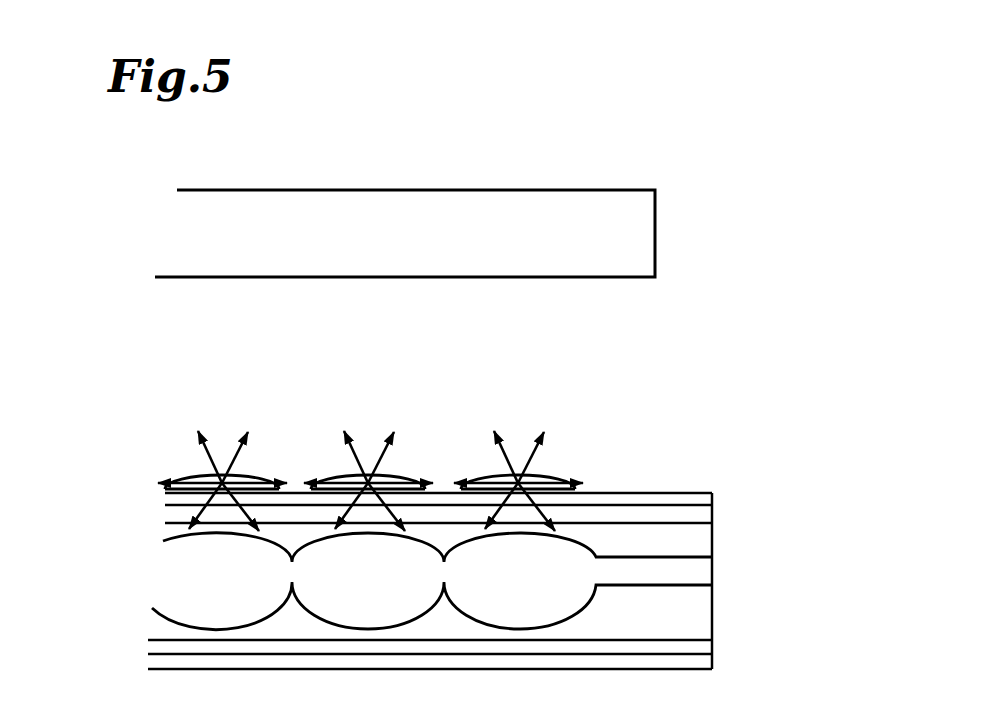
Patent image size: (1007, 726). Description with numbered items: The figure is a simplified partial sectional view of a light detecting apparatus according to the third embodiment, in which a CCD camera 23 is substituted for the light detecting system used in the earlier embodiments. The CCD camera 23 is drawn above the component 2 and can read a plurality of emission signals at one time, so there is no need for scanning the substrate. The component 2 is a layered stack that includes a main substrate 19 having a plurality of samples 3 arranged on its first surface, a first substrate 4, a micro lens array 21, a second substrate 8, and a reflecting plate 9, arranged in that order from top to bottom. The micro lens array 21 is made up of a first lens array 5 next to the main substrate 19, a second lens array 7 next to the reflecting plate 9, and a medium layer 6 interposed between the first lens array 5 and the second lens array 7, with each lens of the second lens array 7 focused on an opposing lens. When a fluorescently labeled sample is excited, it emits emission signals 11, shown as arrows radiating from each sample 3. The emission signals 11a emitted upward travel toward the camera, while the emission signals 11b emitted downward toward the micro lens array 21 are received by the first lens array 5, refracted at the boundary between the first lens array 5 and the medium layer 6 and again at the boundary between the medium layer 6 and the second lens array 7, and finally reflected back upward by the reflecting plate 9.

The component 2 is at (100, 497).
The samples 3 is at (492, 477).
The first substrate 4 is at (713, 517).
The first lens array 5 is at (713, 541).
The medium layer 6 is at (713, 583).
The second lens array 7 is at (713, 620).
The second substrate 8 is at (713, 652).
The reflecting plate 9 is at (680, 667).
The emission signals 11 is at (657, 429).
The emission signals emitted in the direction of the object lens 11a is at (533, 478).
The emission signals emitted in the direction of the micro lens array 11b is at (567, 498).
The main substrate 19 is at (713, 497).
The micro lens array 21 is at (797, 538).
The CCD camera 23 is at (341, 233).